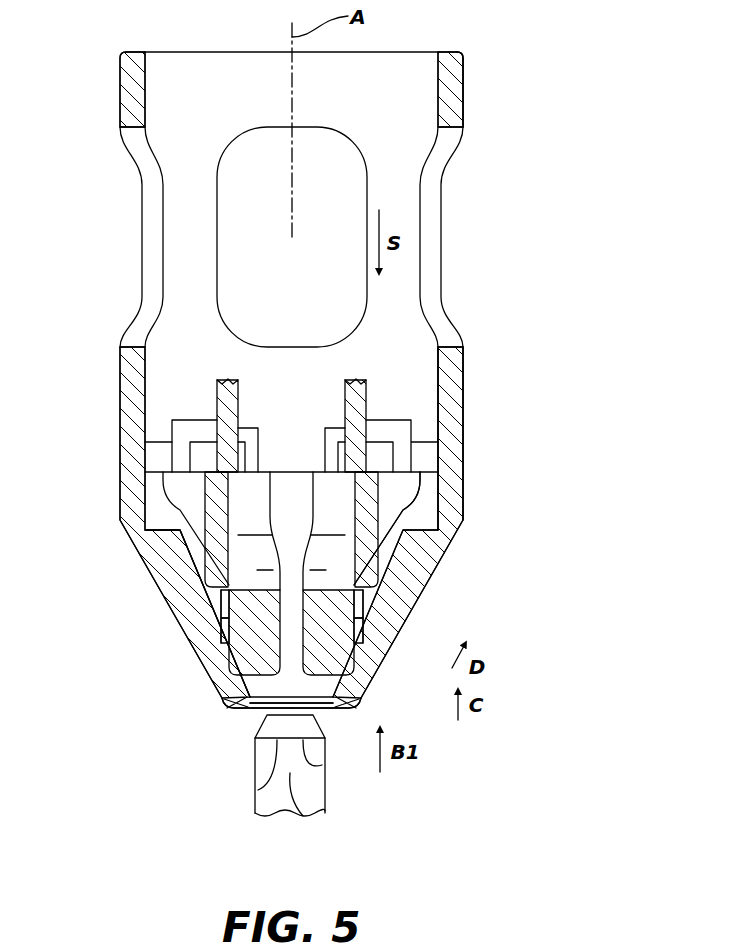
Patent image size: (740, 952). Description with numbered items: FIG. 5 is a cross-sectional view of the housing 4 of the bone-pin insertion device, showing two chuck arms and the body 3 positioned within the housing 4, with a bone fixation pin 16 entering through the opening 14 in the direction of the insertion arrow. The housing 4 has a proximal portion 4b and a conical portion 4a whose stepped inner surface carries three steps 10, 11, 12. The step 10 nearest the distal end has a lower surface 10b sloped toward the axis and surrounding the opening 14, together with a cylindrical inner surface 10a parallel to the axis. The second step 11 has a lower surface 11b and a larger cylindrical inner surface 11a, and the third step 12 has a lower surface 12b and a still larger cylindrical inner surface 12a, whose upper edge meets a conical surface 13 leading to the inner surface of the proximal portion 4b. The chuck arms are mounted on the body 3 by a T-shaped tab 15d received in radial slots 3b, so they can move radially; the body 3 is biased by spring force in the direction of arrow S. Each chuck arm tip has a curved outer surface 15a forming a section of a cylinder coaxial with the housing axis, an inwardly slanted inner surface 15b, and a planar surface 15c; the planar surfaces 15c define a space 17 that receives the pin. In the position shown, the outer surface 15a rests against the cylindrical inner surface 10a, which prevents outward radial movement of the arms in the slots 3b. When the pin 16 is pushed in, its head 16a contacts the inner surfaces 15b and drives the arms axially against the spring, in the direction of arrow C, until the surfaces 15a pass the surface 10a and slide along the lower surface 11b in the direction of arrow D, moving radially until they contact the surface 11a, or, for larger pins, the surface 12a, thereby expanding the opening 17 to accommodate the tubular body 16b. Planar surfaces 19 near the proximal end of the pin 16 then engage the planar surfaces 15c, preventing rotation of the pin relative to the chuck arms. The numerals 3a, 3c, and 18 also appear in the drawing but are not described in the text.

The body 3 is at (63, 347).
The inner body lower portion 3a is at (160, 480).
The radial slot 3b is at (157, 453).
The inner body pin 3c is at (214, 394).
The housing 4 is at (555, 428).
The conical portion 4a is at (445, 555).
The proximal portion 4b is at (463, 428).
The step 10 is at (106, 672).
The cylindrical inner surface 10a is at (227, 658).
The lower surface 10b is at (250, 697).
The step 11 is at (503, 580).
The cylindrical inner surface 11a is at (365, 628).
The lower surface 11b is at (362, 648).
The step 12 is at (62, 590).
The cylindrical inner surface 12a is at (221, 598).
The lower surface 12b is at (221, 636).
The conical surface 13 is at (165, 550).
The opening 14 is at (324, 710).
The curved outer surface 15a is at (390, 603).
The inner surface 15b is at (337, 675).
The planar surface 15c is at (299, 598).
The T-shaped tab 15d is at (193, 418).
The bone fixation pin 16 is at (148, 745).
The head 16a is at (252, 728).
The tubular body 16b is at (253, 805).
The space 17 is at (313, 667).
The fluid tip 18 is at (303, 815).
The planar surface 19 is at (318, 763).